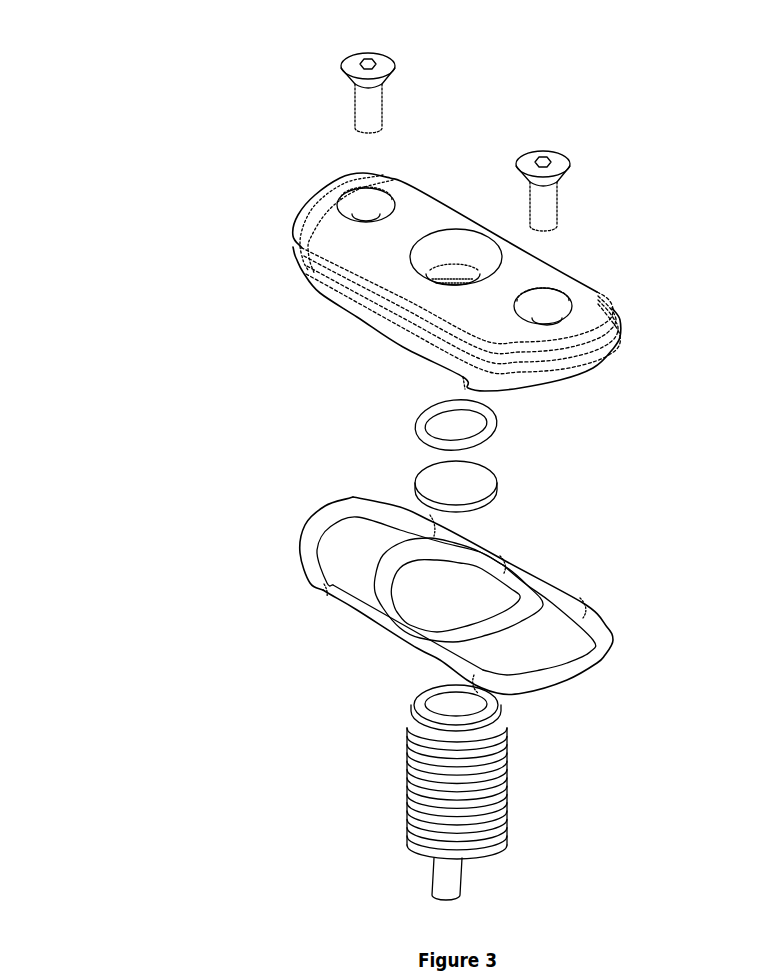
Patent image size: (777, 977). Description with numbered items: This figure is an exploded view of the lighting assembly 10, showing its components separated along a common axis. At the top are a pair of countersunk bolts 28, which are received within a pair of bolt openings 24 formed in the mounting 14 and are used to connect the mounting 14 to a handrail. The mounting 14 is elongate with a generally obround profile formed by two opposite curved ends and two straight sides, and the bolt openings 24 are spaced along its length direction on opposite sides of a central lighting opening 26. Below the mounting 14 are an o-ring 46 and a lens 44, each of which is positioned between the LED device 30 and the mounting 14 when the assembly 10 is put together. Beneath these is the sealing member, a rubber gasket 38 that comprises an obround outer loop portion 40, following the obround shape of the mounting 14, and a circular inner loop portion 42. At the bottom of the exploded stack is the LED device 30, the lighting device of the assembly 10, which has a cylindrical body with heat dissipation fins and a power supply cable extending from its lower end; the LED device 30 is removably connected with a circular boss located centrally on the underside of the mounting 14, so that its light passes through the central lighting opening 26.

The assembly 10 is at (143, 88).
The mounting 14 is at (624, 318).
The bolt openings 24 is at (352, 202).
The central lighting opening 26 is at (420, 258).
The countersunk bolts 28 is at (572, 167).
The LED device 30 is at (509, 803).
The rubber gasket 38 is at (617, 643).
The obround outer loop portion 40 is at (310, 573).
The circular inner loop portion 42 is at (393, 572).
The lens 44 is at (500, 488).
The o-ring 46 is at (500, 423).